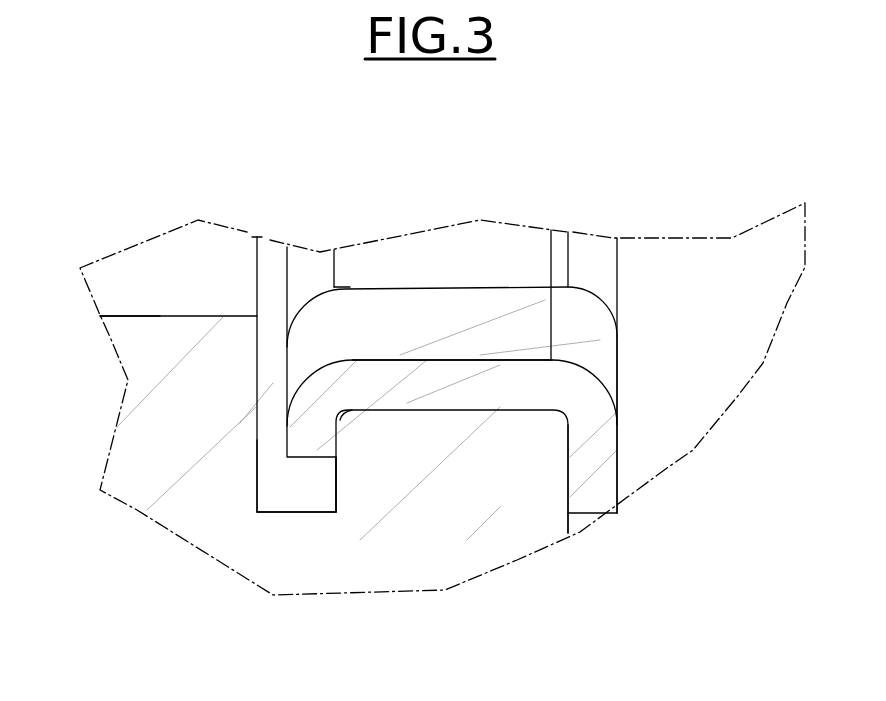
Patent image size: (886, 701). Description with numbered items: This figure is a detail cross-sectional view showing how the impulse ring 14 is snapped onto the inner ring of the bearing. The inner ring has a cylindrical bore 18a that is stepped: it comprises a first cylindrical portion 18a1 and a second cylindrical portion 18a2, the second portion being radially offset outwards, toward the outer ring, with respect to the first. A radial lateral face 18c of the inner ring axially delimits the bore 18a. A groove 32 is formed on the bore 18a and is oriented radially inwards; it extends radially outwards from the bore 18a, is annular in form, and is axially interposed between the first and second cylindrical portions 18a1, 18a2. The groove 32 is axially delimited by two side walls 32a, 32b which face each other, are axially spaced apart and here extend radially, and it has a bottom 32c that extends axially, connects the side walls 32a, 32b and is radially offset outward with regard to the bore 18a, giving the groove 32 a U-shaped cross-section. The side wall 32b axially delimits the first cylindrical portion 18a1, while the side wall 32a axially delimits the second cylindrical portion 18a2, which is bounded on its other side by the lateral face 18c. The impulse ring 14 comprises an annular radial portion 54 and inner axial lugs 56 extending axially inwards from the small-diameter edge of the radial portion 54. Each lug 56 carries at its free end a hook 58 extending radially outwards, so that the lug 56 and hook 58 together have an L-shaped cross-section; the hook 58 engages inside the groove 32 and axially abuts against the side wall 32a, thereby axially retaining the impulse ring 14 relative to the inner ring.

The impulse ring 14 is at (631, 466).
The bore 18a is at (200, 306).
The first cylindrical portion 18a1 is at (155, 315).
The second cylindrical portion 18a2 is at (450, 408).
The radial lateral face 18c is at (568, 513).
The groove 32 is at (297, 500).
The side wall 32a is at (326, 470).
The side wall 32b is at (258, 453).
The bottom 32c is at (315, 512).
The annular radial portion 54 is at (593, 462).
The inner axial lug 56 is at (511, 386).
The hook 58 is at (353, 360).